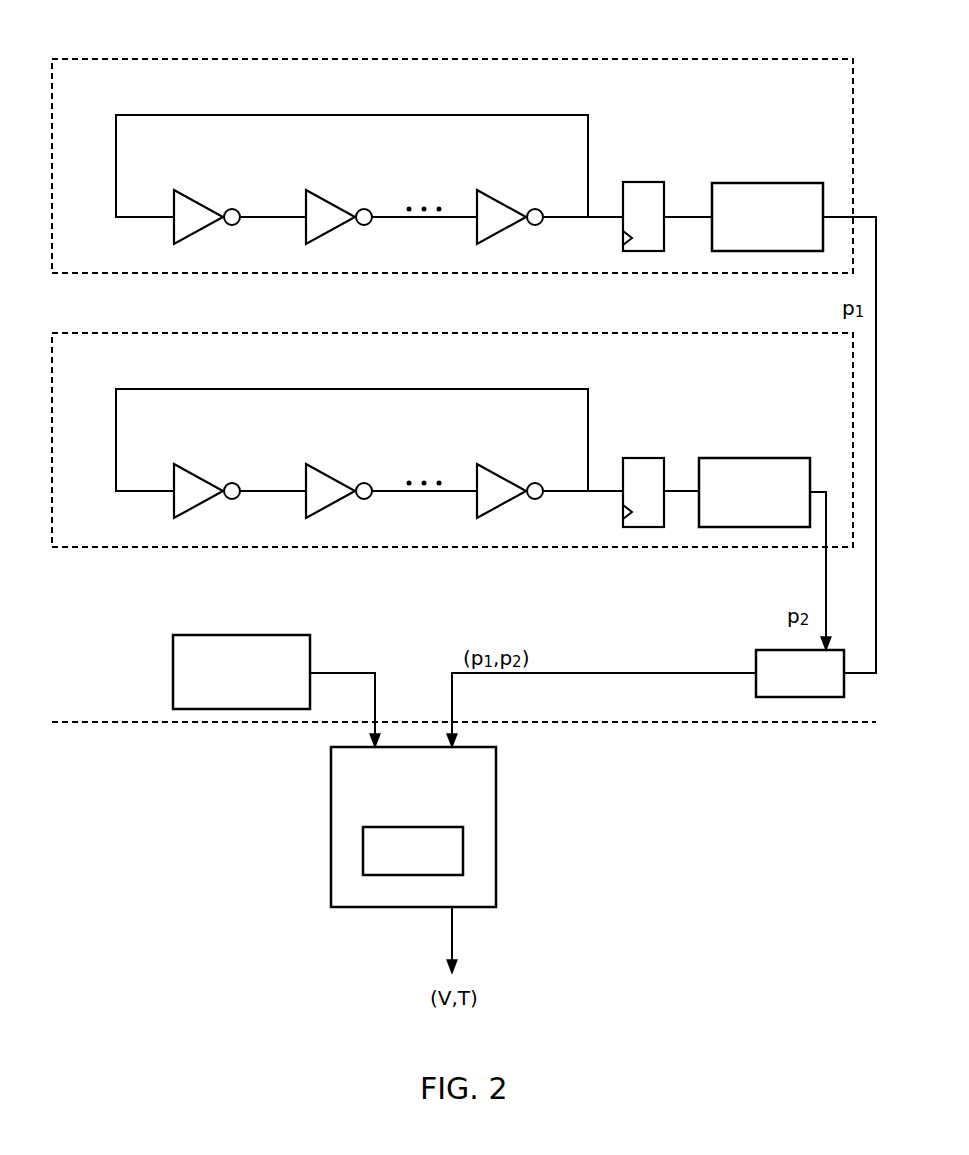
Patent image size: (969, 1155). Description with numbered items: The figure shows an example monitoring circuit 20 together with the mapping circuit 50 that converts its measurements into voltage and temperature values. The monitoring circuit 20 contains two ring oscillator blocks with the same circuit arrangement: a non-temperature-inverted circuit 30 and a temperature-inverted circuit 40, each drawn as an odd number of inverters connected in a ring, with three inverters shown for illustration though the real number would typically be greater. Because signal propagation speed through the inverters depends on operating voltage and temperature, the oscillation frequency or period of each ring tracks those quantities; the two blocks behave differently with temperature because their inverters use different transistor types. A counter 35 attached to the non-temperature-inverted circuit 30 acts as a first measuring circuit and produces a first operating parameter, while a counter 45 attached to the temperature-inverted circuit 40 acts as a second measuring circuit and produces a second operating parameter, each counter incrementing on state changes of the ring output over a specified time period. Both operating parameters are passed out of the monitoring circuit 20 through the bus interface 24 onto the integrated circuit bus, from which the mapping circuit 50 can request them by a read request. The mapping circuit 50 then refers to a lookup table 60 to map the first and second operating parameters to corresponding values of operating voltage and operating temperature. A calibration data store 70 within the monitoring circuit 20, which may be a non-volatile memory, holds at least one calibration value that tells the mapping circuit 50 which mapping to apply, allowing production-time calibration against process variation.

The monitoring circuit 20 is at (108, 580).
The non-temperature-inverted circuit 30 is at (452, 144).
The counter 35 is at (766, 183).
The temperature-inverted circuit 40 is at (452, 420).
The counter 45 is at (755, 458).
The bus interface 24 is at (756, 659).
The calibration data store 70 is at (240, 635).
The mapping circuit 50 is at (411, 827).
The lookup table 60 is at (363, 851).